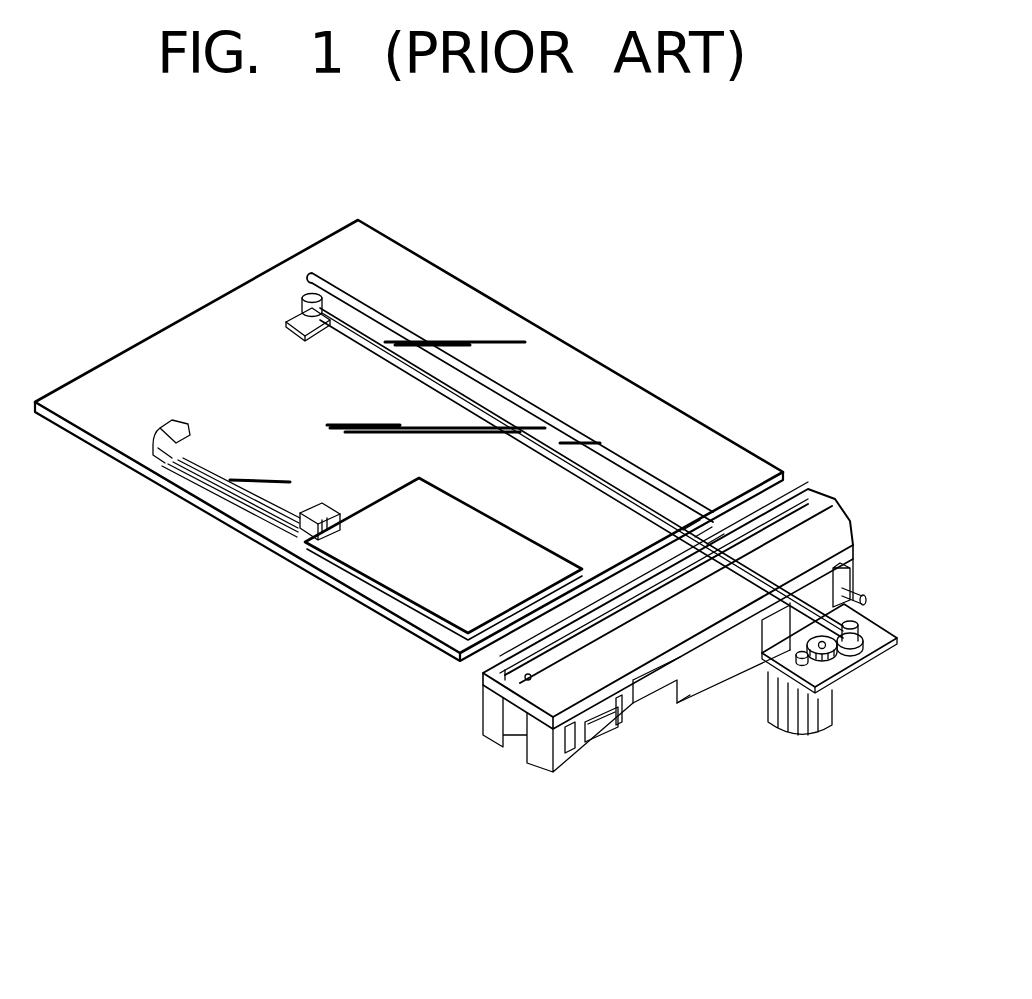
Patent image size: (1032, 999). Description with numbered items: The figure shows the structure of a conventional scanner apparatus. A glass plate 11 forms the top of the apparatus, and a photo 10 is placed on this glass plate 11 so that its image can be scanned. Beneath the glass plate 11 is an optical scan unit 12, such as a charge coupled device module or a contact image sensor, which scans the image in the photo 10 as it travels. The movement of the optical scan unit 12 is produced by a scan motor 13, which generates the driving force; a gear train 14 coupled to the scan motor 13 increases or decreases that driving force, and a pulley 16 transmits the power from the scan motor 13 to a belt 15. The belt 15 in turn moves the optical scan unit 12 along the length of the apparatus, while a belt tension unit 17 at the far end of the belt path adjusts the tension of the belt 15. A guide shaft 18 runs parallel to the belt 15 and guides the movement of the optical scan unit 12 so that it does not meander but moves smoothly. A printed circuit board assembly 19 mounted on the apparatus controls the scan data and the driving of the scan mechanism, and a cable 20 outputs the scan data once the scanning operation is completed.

The photo 10 is at (408, 588).
The glass plate 11 is at (168, 345).
The optical scan unit 12 is at (494, 775).
The scan motor 13 is at (806, 724).
The gear train 14 is at (830, 655).
The belt 15 is at (595, 465).
The pulley 16 is at (856, 630).
The belt tension unit 17 is at (296, 290).
The guide shaft 18 is at (655, 470).
The printed circuit board assembly 19 is at (692, 683).
The cable 20 is at (240, 500).